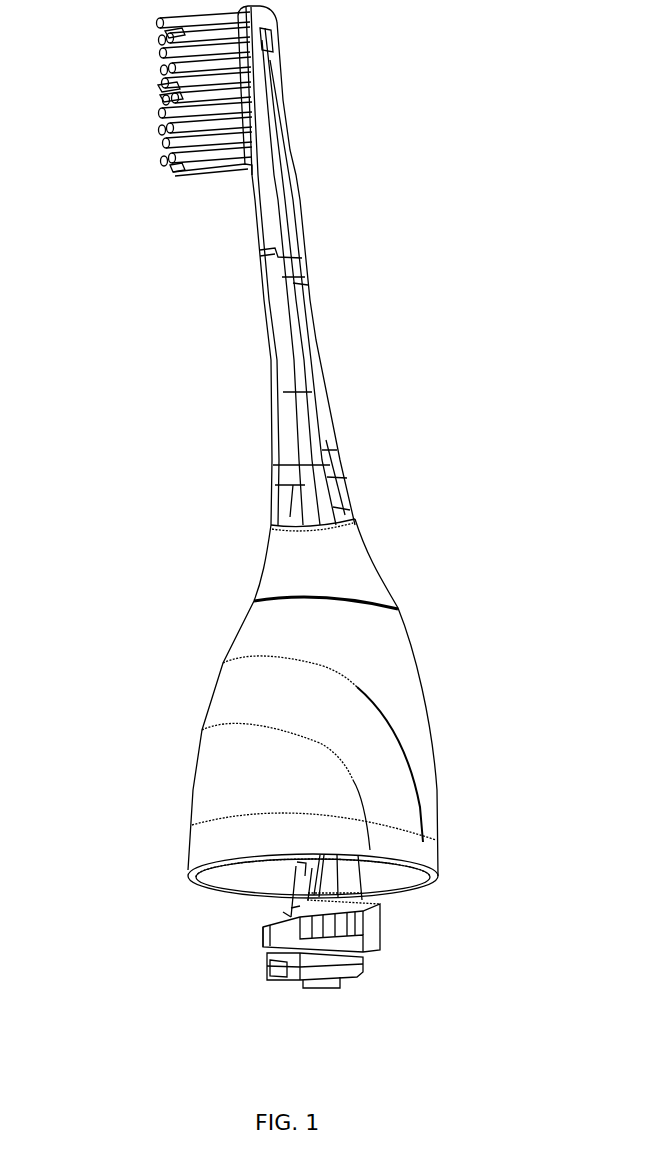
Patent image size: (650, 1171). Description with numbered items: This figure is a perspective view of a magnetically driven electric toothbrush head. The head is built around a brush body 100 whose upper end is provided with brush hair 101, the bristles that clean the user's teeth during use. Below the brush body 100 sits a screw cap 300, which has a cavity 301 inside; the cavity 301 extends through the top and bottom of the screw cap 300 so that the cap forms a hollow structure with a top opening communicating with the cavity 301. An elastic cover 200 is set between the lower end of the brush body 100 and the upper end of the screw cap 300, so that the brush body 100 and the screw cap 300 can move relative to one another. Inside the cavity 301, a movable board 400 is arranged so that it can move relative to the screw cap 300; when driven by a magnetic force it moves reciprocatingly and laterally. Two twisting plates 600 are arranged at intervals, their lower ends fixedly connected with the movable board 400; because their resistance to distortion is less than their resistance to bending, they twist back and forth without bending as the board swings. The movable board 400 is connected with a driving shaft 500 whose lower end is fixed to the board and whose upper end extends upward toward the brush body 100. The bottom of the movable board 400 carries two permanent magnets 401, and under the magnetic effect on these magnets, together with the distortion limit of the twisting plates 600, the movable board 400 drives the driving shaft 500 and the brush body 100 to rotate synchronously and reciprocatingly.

The brush body 100 is at (300, 372).
The brush hair 101 is at (222, 88).
The elastic cover 200 is at (345, 565).
The screw cap 300 is at (402, 712).
The cavity 301 is at (265, 865).
The movable board 400 is at (380, 933).
The permanent magnets 401 is at (337, 963).
The driving shaft 500 is at (349, 873).
The twisting plates 600 is at (307, 870).